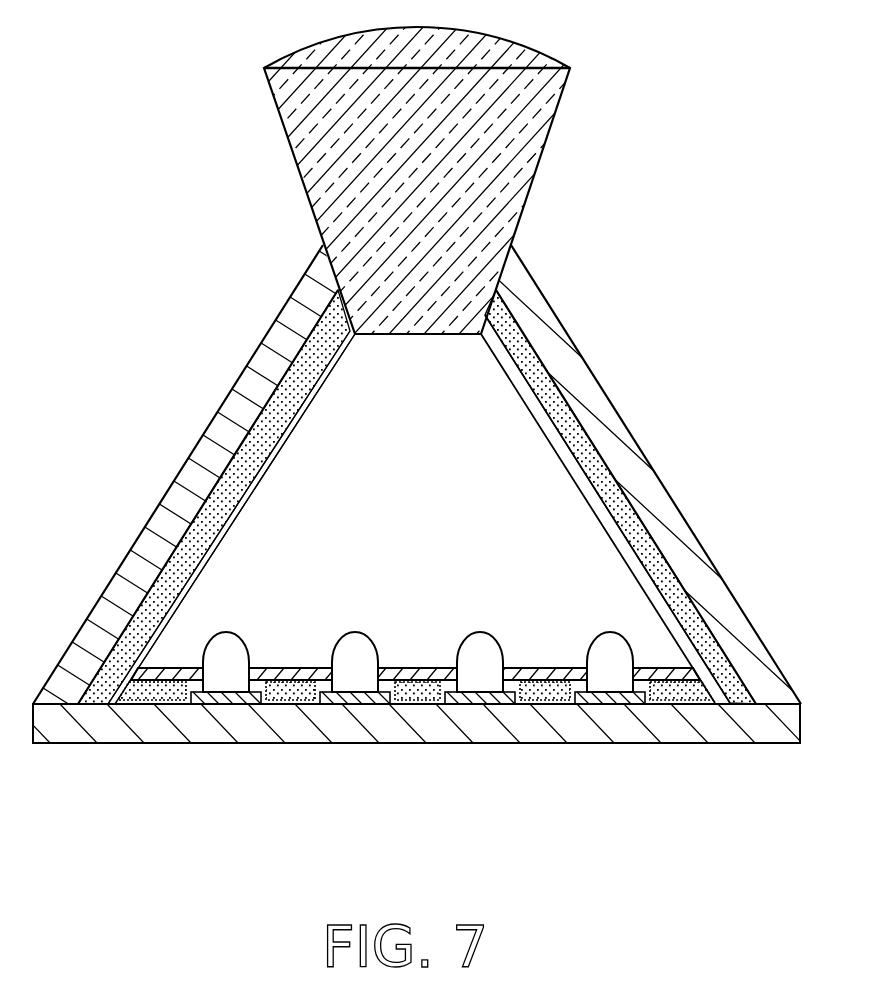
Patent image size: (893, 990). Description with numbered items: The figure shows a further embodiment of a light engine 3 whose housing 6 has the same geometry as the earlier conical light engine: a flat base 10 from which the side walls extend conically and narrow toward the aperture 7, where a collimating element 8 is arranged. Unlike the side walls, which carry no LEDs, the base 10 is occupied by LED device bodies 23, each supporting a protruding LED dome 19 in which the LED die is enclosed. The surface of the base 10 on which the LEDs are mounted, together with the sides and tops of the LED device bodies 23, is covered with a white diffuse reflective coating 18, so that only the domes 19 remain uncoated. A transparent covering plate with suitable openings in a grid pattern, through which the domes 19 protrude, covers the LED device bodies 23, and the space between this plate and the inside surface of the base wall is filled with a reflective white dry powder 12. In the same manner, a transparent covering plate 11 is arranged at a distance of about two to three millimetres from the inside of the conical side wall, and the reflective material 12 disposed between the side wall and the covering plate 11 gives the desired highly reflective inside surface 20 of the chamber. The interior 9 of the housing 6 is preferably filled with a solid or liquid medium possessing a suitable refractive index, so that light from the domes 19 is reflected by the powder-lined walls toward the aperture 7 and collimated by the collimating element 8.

The light engine 3 is at (431, 417).
The housing 6 is at (243, 347).
The aperture 7 is at (413, 373).
The collimating element 8 is at (503, 180).
The interior 9 is at (530, 485).
The base 10 is at (235, 722).
The transparent covering plate 11 is at (652, 582).
The reflective white powder 12 is at (643, 543).
The white diffuse reflective coating 18 is at (418, 703).
The LED dome 19 is at (602, 660).
The highly reflective inside surface 20 is at (500, 393).
The LED device body 23 is at (495, 705).